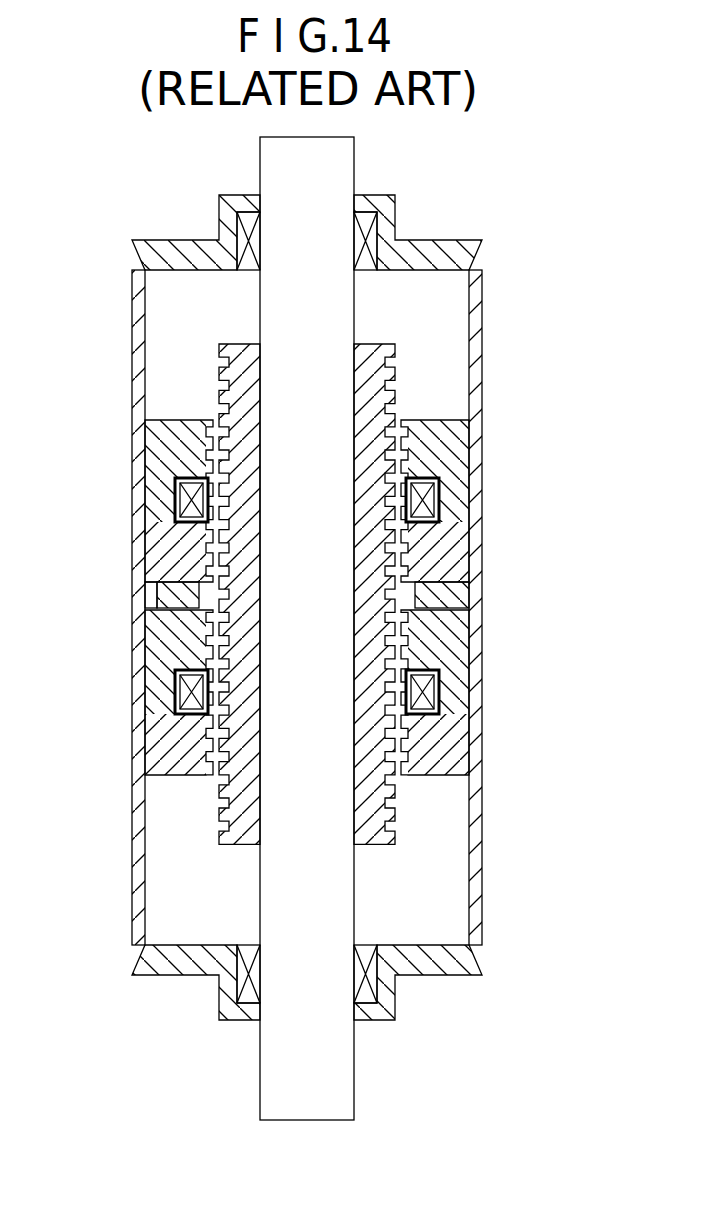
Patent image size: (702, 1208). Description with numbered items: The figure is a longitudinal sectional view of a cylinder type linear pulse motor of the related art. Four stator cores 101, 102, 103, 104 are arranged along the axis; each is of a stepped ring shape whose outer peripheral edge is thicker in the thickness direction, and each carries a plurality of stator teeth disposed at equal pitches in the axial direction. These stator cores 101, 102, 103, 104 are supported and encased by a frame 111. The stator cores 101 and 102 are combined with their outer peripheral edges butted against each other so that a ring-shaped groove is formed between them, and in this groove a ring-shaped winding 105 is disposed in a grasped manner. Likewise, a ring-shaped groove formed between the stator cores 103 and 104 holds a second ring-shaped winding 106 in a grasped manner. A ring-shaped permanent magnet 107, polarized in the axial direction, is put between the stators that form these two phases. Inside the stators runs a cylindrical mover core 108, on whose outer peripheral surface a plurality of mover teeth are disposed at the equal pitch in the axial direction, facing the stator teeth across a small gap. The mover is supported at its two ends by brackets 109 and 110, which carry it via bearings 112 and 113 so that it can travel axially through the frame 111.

The stator core 101 is at (452, 447).
The stator core 102 is at (443, 563).
The stator core 103 is at (445, 643).
The stator core 104 is at (448, 748).
The ring-shaped winding 105 is at (176, 493).
The ring-shaped winding 106 is at (176, 690).
The ring-shaped permanent magnet 107 is at (155, 594).
The mover core 108 is at (367, 802).
The bracket 109 is at (455, 250).
The bracket 110 is at (460, 966).
The frame 111 is at (476, 305).
The bearing 112 is at (366, 214).
The bearing 113 is at (370, 999).